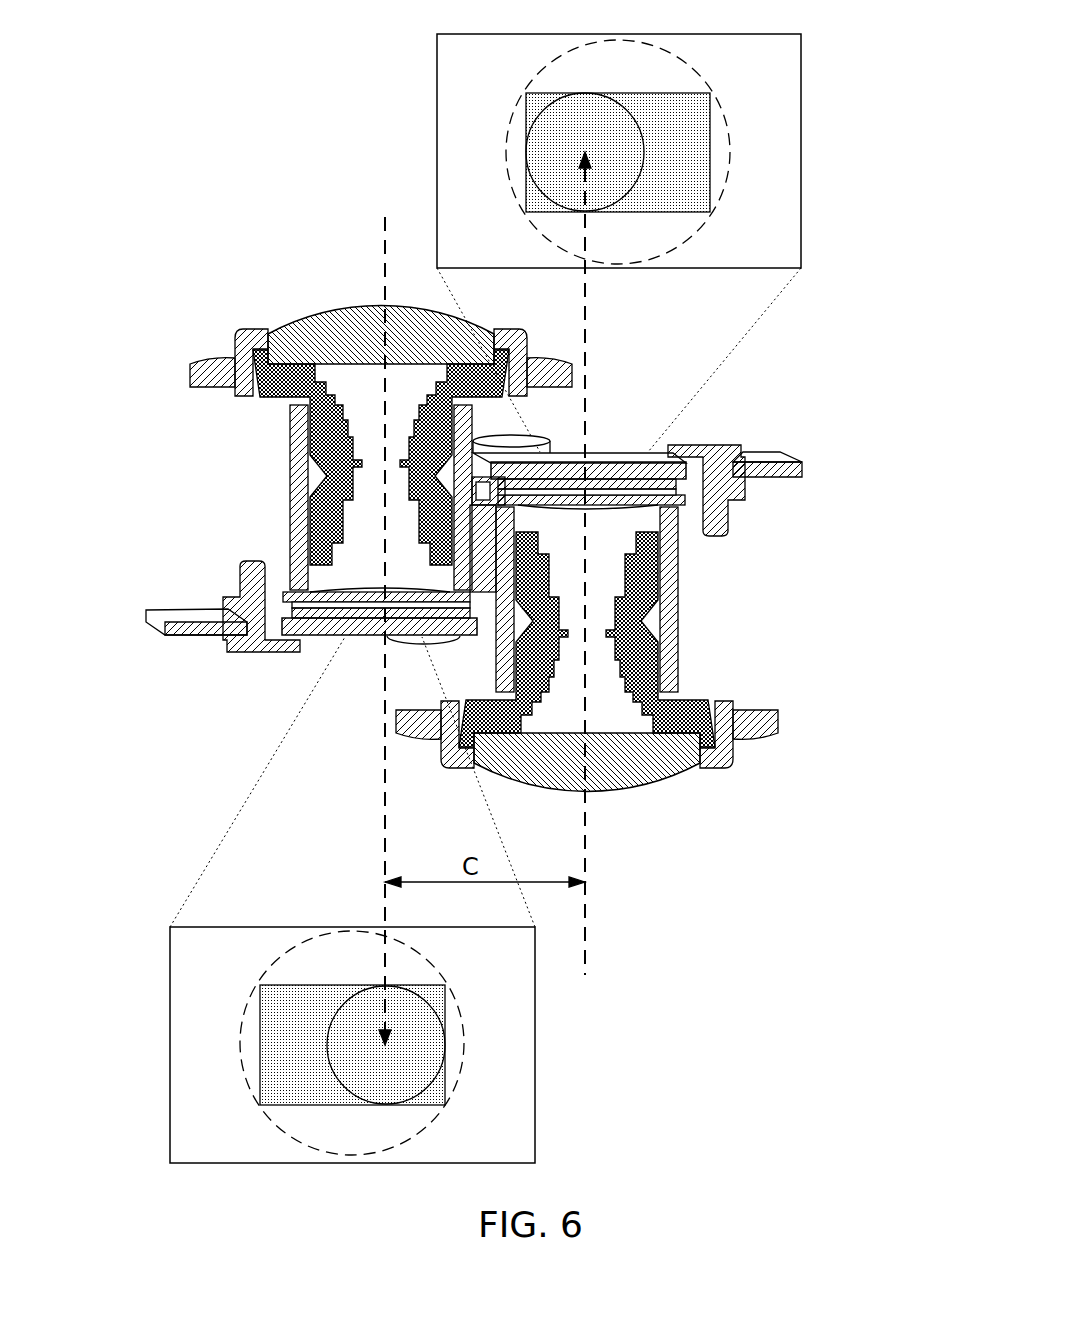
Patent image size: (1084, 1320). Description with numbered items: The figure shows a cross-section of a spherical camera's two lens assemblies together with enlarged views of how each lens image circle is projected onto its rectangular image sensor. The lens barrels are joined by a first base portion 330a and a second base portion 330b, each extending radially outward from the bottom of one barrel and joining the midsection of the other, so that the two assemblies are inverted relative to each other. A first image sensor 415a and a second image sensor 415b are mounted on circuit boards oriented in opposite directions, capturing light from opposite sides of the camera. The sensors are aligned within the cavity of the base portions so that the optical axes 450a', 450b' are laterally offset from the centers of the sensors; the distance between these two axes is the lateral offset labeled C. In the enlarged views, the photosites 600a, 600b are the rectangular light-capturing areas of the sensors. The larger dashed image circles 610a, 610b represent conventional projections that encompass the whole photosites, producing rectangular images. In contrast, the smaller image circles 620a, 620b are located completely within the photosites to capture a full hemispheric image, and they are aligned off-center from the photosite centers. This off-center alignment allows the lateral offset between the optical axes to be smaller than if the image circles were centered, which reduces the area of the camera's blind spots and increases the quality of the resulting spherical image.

The first base portion 330a is at (178, 643).
The second base portion 330b is at (808, 470).
The first image sensor 415a is at (170, 1050).
The second image sensor 415b is at (801, 158).
The optical axis 450a' is at (352, 631).
The optical axis 450b' is at (615, 563).
The photosites 600a is at (260, 1000).
The photosites 600b is at (710, 118).
The image circle 610a is at (327, 935).
The image circle 610b is at (650, 42).
The image circle 620a is at (366, 987).
The image circle 620b is at (607, 93).